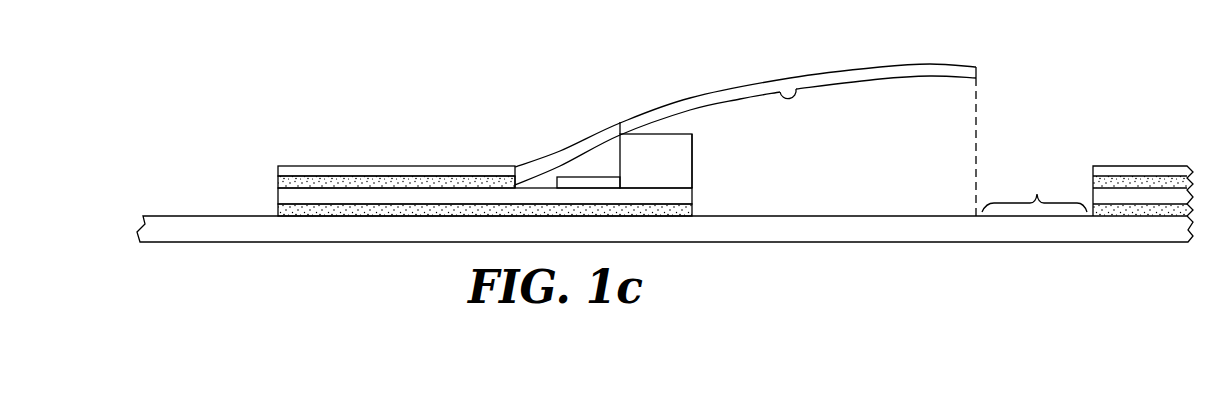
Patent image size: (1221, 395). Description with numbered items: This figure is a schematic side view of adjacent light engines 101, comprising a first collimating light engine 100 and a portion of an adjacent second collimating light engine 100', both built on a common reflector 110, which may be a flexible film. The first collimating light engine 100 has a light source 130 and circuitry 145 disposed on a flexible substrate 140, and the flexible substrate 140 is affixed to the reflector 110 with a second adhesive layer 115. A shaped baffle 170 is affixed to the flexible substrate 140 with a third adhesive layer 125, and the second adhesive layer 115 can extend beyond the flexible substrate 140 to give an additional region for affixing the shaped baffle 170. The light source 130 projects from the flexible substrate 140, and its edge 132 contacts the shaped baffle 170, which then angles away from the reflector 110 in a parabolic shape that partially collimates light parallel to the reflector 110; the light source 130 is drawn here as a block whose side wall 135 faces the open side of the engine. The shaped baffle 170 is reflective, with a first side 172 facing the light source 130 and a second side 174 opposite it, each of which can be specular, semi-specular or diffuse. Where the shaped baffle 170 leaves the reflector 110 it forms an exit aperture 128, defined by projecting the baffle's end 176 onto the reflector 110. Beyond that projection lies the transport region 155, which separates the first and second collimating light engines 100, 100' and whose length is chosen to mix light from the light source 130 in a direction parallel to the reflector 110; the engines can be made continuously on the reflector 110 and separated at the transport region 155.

The adjacent light engines 101 is at (203, 85).
The first collimating light engine 100 is at (625, 115).
The second collimating light engine 100' is at (1143, 154).
The reflector 110 is at (180, 237).
The second adhesive layer 115 is at (278, 213).
The third adhesive layer 125 is at (328, 181).
The flexible substrate 140 is at (278, 198).
The shaped baffle 170 is at (383, 172).
The circuitry 145 is at (588, 177).
The light source 130 is at (665, 142).
The edge 132 is at (621, 134).
The anchor side wall 135 is at (693, 150).
The second side 174 is at (870, 67).
The first side 172 is at (797, 96).
The beam tip 176 is at (978, 73).
The exit aperture 128 is at (976, 125).
The transport region 155 is at (1034, 188).